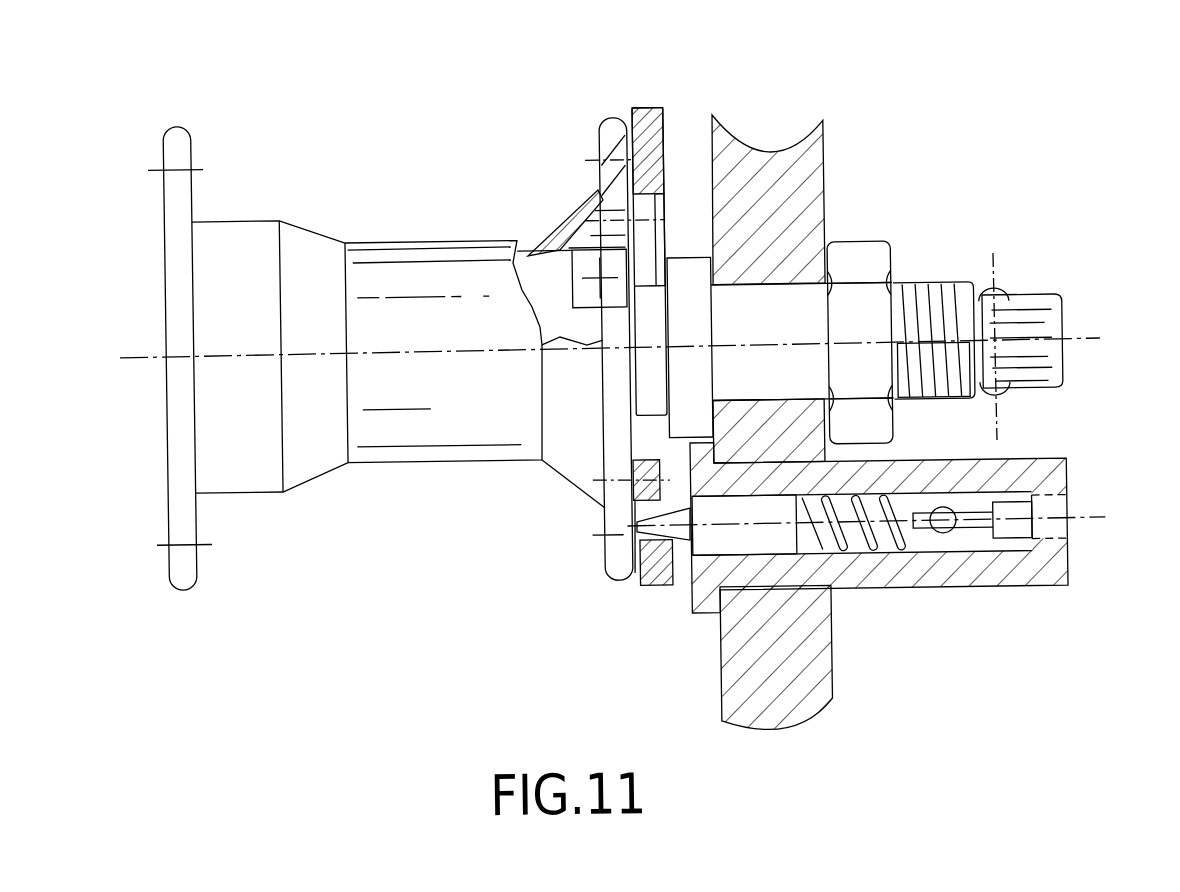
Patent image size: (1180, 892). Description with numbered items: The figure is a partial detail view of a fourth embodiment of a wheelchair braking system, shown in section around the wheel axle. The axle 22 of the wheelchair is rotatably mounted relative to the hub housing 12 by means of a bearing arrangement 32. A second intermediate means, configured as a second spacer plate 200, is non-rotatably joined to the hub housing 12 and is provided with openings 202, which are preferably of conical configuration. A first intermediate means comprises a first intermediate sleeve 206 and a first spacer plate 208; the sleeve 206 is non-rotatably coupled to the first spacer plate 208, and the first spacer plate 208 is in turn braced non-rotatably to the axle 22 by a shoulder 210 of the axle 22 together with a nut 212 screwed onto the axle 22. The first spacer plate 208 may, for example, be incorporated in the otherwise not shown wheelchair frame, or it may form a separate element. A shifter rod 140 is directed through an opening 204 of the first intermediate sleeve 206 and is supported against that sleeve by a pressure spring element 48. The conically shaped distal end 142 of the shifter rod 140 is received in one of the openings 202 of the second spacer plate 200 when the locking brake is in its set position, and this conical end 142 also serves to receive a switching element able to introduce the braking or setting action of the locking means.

The hub housing 12 is at (416, 334).
The axle 22 is at (570, 319).
The bearing arrangement 32 is at (588, 287).
The pressure spring element 48 is at (848, 536).
The shifter rod 140 is at (761, 534).
The conical end 142 is at (680, 548).
The second spacer plate 200 is at (651, 118).
The openings 202 is at (636, 531).
The opening 204 is at (885, 556).
The first intermediate sleeve 206 is at (1008, 475).
The first spacer plate 208 is at (793, 187).
The shoulder 210 is at (688, 276).
The nut 212 is at (867, 259).